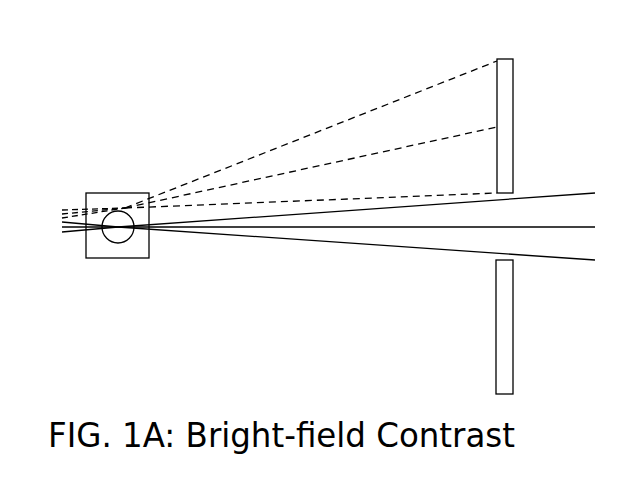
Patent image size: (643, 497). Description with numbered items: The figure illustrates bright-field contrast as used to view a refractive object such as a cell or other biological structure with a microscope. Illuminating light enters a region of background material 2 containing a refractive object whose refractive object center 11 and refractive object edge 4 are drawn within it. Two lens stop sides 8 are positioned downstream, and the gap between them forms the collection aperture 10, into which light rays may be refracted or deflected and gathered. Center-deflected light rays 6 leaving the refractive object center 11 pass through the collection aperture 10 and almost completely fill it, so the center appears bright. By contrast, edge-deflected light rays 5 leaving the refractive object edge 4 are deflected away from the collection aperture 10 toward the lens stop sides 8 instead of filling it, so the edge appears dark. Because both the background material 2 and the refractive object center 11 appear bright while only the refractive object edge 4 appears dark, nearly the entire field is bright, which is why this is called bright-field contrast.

The background material 2 is at (86, 193).
The refractive object edge 4 is at (118, 243).
The edge-deflected light rays 5 is at (233, 203).
The center-deflected light rays 6 is at (310, 240).
The lens stop sides 8 is at (513, 127).
The collection aperture 10 is at (507, 217).
The refractive object center 11 is at (117, 228).